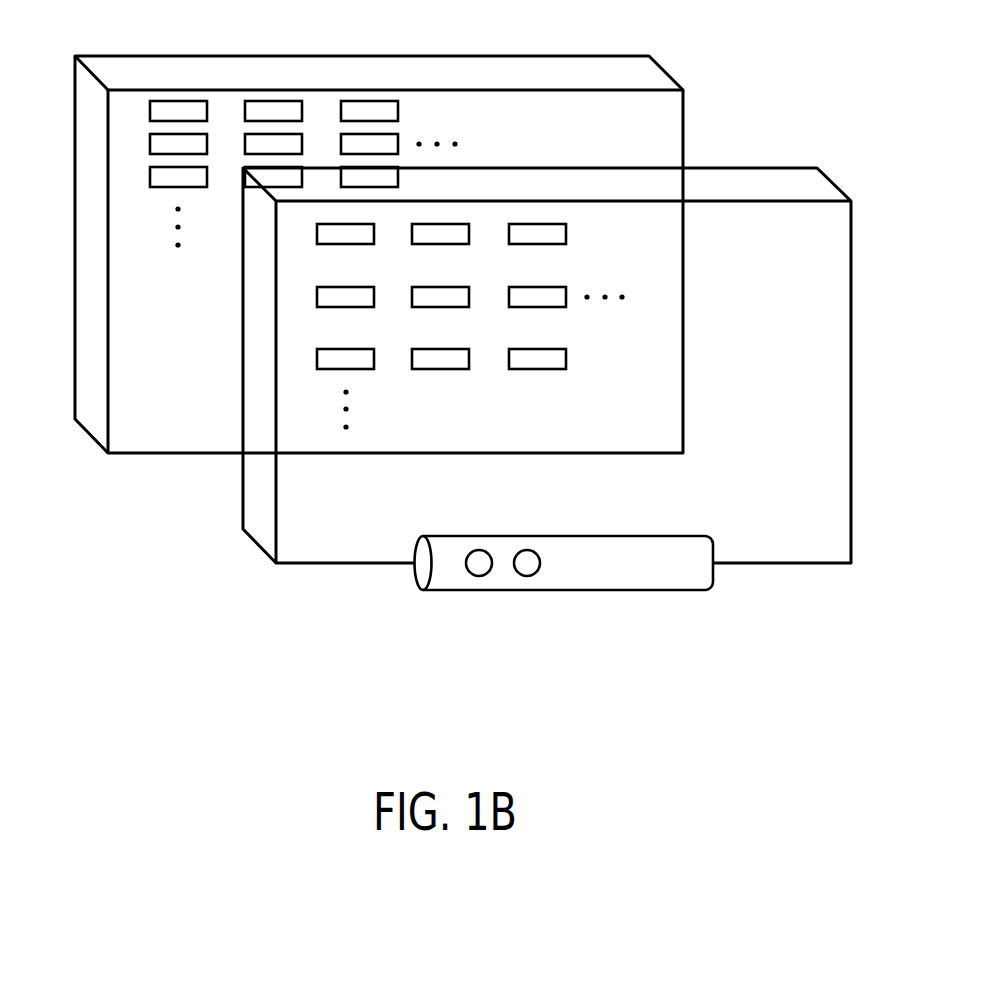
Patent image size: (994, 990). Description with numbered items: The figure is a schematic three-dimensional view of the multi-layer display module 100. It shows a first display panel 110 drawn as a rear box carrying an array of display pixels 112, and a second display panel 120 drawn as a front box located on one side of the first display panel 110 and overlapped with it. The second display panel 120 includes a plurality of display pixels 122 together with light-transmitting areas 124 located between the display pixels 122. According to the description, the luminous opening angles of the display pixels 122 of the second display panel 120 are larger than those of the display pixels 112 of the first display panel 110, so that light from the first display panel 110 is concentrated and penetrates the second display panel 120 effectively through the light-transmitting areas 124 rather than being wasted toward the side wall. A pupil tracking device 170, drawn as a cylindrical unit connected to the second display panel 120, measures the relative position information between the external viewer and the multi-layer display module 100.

The multi-layer display module 100 is at (487, 347).
The first display panel 110 is at (372, 256).
The display pixels 112 is at (180, 110).
The second display panel 120 is at (570, 390).
The display pixels 122 is at (552, 298).
The light-transmitting areas 124 is at (549, 261).
The pupil tracking device 170 is at (596, 570).